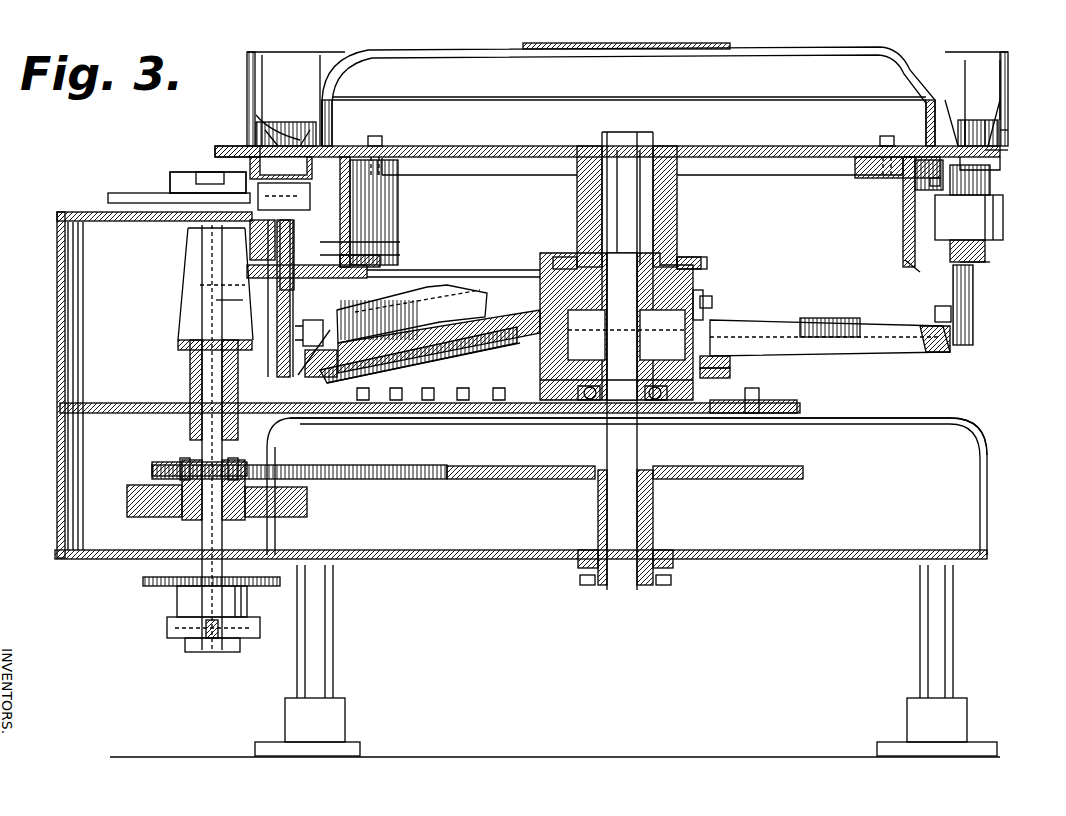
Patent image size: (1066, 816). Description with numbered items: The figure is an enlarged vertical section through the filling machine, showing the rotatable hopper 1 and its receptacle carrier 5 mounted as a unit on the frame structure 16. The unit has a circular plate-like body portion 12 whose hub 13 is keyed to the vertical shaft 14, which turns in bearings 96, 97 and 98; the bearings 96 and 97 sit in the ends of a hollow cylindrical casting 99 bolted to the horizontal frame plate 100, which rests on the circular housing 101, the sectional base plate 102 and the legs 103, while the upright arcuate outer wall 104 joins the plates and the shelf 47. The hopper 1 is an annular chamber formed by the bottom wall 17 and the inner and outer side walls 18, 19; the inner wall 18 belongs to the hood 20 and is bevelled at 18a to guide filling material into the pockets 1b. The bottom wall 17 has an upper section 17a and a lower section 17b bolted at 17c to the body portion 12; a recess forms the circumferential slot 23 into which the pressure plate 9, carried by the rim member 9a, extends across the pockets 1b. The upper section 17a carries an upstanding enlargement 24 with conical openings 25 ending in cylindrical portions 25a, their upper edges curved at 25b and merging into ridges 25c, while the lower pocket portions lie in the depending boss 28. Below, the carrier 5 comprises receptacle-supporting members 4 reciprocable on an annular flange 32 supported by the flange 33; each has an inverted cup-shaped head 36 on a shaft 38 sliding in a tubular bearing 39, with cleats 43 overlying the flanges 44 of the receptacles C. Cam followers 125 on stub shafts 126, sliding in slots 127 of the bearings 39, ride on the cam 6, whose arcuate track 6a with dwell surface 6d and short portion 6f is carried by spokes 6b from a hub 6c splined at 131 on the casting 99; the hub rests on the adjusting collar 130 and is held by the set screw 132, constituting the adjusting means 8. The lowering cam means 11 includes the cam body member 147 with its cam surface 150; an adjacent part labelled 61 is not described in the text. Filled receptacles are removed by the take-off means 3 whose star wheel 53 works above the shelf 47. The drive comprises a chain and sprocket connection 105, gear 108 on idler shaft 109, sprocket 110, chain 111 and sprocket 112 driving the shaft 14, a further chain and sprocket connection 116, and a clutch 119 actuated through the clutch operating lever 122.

The movable hopper 1 is at (314, 50).
The pockets 1b is at (288, 118).
The take-off means 3 is at (158, 188).
The receptacle-supporting members 4 is at (248, 242).
The carrier 5 is at (248, 264).
The cam 6 is at (952, 354).
The arcuate cam track 6a is at (936, 336).
The spokes 6b is at (834, 318).
The hub 6c is at (546, 270).
The dwell surface 6d is at (948, 322).
The short track portion 6f is at (300, 380).
The adjusting means 8 is at (736, 378).
The pressure plate 9 is at (240, 160).
The rim member 9a is at (228, 150).
The cam means 11 is at (460, 280).
The body portion 12 is at (530, 148).
The hub 13 is at (668, 208).
The vertical shaft 14 is at (636, 150).
The frame structure 16 is at (56, 398).
The annular bottom wall 17 is at (386, 142).
The upper section 17a is at (908, 142).
The lower section 17b is at (930, 168).
The bolts 17c is at (374, 146).
The inner side wall 18 is at (326, 118).
The bevelled upper portion 18a is at (372, 52).
The outer side wall 19 is at (246, 68).
The circular hood 20 is at (503, 45).
The slot 23 is at (1002, 156).
The circumferential enlargement 24 is at (1008, 134).
The conical openings 25 is at (268, 118).
The cylindrical portions 25a is at (264, 136).
The curved edges 25b is at (952, 140).
The ridges 25c is at (258, 122).
The boss 28 is at (1000, 172).
The annular flange 32 is at (380, 256).
The depending flange 33 is at (350, 214).
The cup-shaped head 36 is at (380, 240).
The reciprocable shaft 38 is at (280, 300).
The tubular bearing 39 is at (270, 308).
The cleats 43 is at (932, 188).
The flanges 44 is at (972, 194).
The shelf 47 is at (108, 212).
The star wheel 53 is at (146, 194).
The cam follower 61 is at (446, 340).
The bearing 96 is at (682, 262).
The bearing 97 is at (660, 402).
The bearing 98 is at (656, 536).
The cylindrical casting 99 is at (574, 380).
The frame plate 100 is at (138, 403).
The circular housing 101 is at (860, 416).
The base plate 102 is at (108, 552).
The legs 103 is at (306, 630).
The outer wall 104 is at (57, 330).
The chain and sprocket drive connection 105 is at (142, 590).
The gear 108 is at (122, 494).
The idler shaft 109 is at (212, 422).
The sprocket 110 is at (180, 464).
The chain 111 is at (420, 466).
The sprocket 112 is at (534, 480).
The chain and sprocket drive connection 116 is at (176, 362).
The clutch 119 is at (176, 620).
The clutch operating lever 122 is at (214, 640).
The cam followers 125 is at (936, 306).
The stub shafts 126 is at (952, 314).
The slots 127 is at (306, 322).
The adjusting collar 130 is at (732, 366).
The spline 131 is at (716, 302).
The set screw 132 is at (735, 290).
The cam body member 147 is at (468, 312).
The cam surface 150 is at (408, 304).
The receptacles C is at (306, 202).